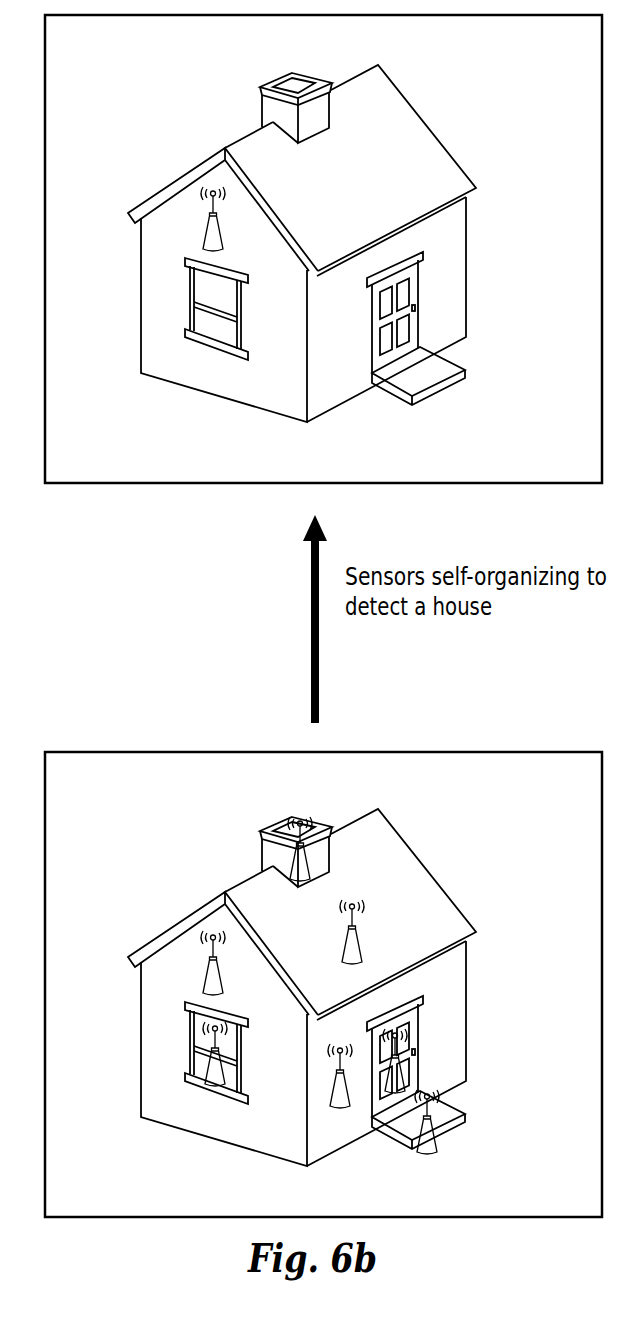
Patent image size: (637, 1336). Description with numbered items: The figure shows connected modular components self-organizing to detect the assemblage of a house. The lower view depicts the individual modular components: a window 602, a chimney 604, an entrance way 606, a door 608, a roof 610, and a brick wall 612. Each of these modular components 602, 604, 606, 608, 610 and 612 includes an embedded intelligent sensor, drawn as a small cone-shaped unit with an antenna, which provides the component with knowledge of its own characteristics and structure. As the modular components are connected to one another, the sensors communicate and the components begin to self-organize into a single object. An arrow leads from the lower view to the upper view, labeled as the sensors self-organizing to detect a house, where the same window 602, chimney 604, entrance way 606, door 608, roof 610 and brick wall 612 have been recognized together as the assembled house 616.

The window 602 is at (170, 1070).
The chimney 604 is at (270, 838).
The entrance way 606 is at (450, 1108).
The door 608 is at (447, 1039).
The roof 610 is at (313, 914).
The brick wall 612 is at (297, 1060).
The house 616 is at (458, 165).